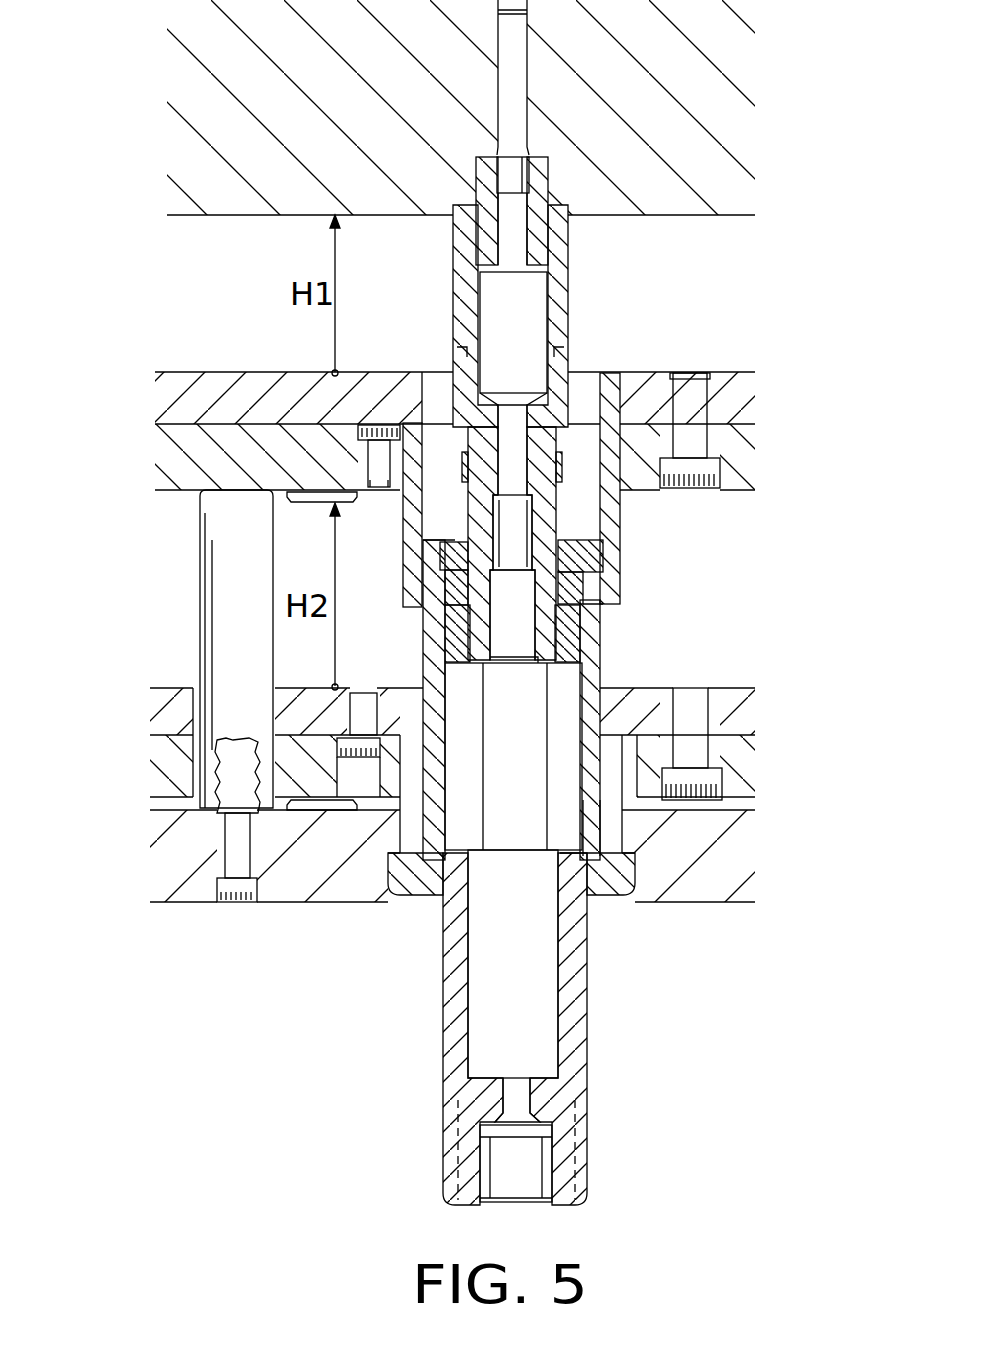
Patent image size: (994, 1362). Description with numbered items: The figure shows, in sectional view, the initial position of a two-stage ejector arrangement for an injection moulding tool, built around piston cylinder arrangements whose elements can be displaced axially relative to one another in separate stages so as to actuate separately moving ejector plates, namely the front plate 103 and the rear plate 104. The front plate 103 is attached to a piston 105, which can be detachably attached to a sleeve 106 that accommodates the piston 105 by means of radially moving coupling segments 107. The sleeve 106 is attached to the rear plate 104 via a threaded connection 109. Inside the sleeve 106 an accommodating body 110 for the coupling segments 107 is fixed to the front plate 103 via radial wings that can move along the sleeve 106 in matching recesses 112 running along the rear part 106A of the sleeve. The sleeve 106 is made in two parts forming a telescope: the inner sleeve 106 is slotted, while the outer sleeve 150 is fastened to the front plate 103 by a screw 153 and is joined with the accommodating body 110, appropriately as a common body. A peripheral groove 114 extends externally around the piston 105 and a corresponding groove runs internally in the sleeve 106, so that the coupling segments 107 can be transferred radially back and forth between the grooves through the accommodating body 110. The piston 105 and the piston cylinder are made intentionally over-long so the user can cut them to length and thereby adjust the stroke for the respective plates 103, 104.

The front plate 103 is at (161, 433).
The rear plate 104 is at (150, 736).
The piston 105 is at (557, 300).
The sleeve 106 is at (579, 651).
The rear part of the sleeve 106A is at (600, 800).
The coupling segments 107 is at (578, 616).
The threaded connection 109 is at (602, 852).
The accommodating body 110 is at (635, 872).
The recesses 112 is at (517, 820).
The peripheral groove 114 is at (553, 470).
The outer sleeve 150 is at (605, 531).
The screw 153 is at (367, 448).